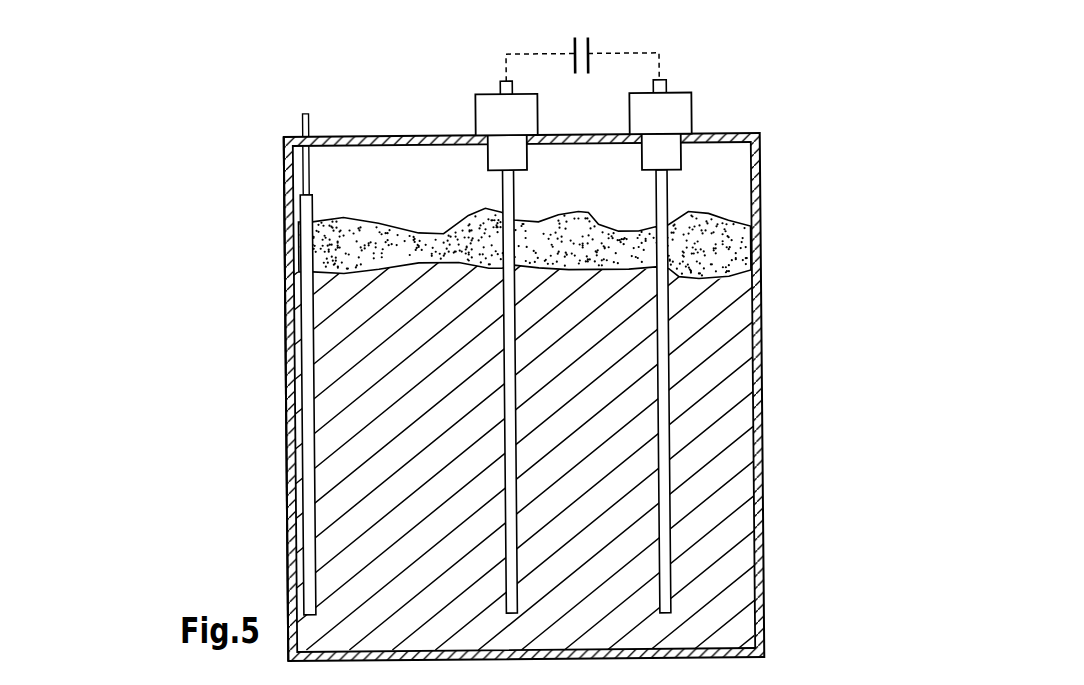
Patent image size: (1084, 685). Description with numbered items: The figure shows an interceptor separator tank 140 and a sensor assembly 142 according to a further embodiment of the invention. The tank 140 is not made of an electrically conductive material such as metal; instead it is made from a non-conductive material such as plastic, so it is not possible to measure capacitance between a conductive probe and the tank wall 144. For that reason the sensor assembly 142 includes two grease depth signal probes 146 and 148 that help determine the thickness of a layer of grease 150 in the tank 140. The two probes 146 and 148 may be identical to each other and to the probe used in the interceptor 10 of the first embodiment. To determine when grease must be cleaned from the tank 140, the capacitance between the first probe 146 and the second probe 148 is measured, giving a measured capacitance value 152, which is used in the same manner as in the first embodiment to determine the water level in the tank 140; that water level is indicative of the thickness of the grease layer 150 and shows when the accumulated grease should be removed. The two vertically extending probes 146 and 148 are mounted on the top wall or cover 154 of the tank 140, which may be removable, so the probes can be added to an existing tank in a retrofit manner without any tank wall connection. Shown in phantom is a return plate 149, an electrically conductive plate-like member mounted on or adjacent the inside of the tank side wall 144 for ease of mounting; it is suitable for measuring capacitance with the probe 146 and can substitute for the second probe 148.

The interceptor 10 is at (214, 438).
The interceptor separator tank 140 is at (274, 477).
The sensor assembly 142 is at (460, 100).
The tank wall 144 is at (287, 347).
The first probe 146 is at (477, 183).
The second probe 148 is at (698, 188).
The return plate 149 is at (277, 299).
The layer of grease 150 is at (712, 247).
The measured capacitance value 152 is at (592, 48).
The cover 154 is at (352, 136).